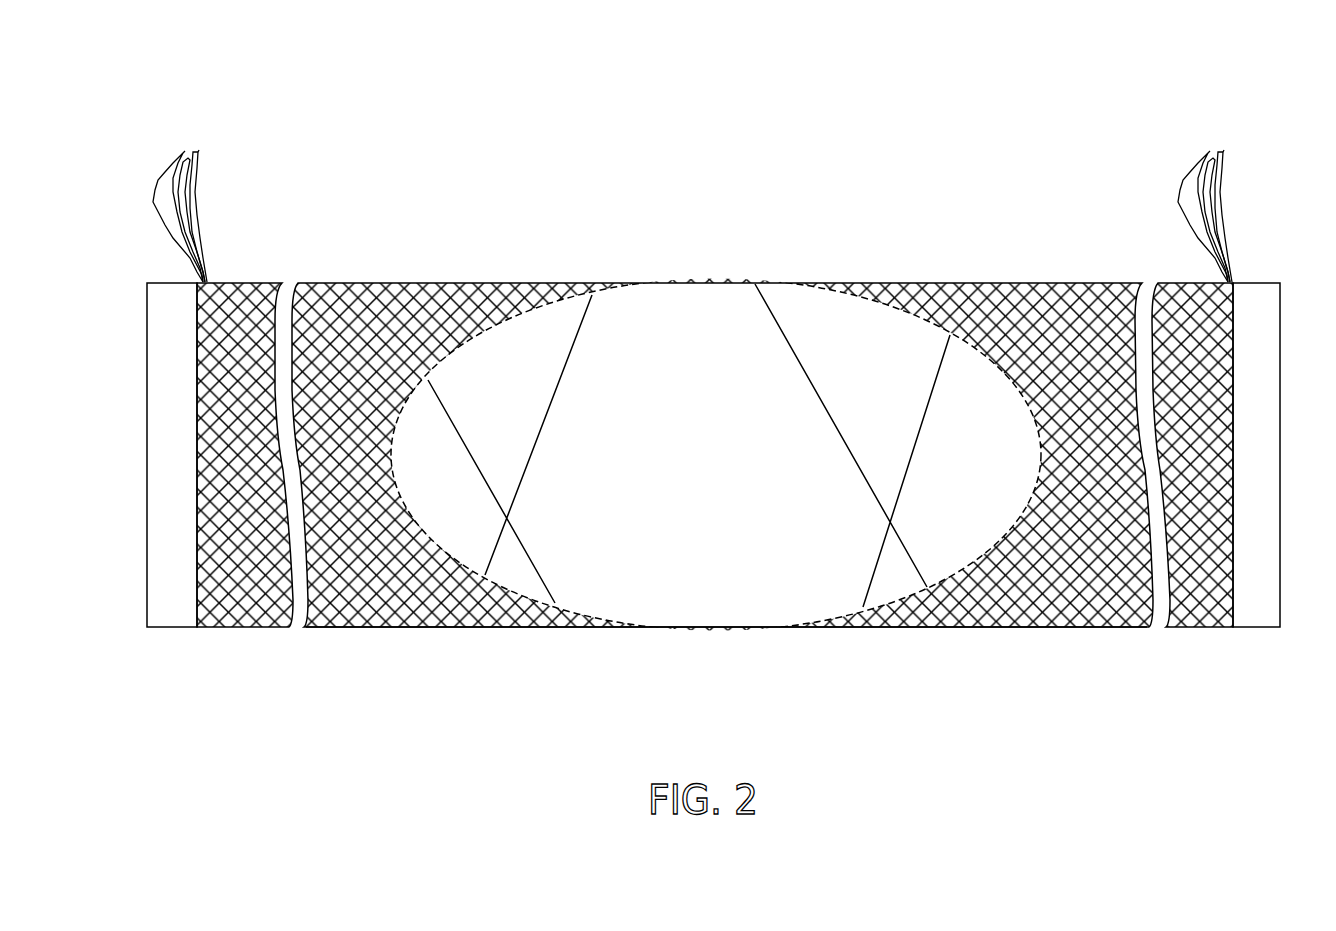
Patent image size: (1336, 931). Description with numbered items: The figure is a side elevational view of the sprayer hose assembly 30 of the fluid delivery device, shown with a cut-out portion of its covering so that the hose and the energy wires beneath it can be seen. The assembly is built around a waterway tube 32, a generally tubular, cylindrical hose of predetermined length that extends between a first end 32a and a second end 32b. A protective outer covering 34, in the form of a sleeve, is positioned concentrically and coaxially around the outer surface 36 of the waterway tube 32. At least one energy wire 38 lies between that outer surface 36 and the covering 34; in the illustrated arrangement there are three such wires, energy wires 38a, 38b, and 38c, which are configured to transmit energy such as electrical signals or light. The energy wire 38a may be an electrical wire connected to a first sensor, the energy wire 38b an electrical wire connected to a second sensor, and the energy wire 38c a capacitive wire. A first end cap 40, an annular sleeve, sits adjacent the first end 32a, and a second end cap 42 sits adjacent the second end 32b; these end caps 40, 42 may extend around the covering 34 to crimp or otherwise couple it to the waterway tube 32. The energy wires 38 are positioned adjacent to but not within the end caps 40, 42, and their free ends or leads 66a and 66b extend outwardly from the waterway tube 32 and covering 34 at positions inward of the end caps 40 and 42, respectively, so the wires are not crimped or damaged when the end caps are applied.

The sprayer hose assembly 30 is at (518, 124).
The waterway tube 32 is at (634, 622).
The first end of waterway tube 32a is at (190, 655).
The second end of waterway tube 32b is at (1223, 657).
The protective outer covering 34 is at (392, 283).
The outer surface of waterway tube 36 is at (712, 293).
The energy wire 38 is at (865, 487).
The first energy wire 38a is at (193, 197).
The second energy wire 38b is at (188, 158).
The third energy wire 38c is at (153, 201).
The first end cap 40 is at (159, 610).
The second end cap 42 is at (1263, 495).
The first free ends of energy wires 66a is at (183, 153).
The second free ends of energy wires 66b is at (1208, 153).